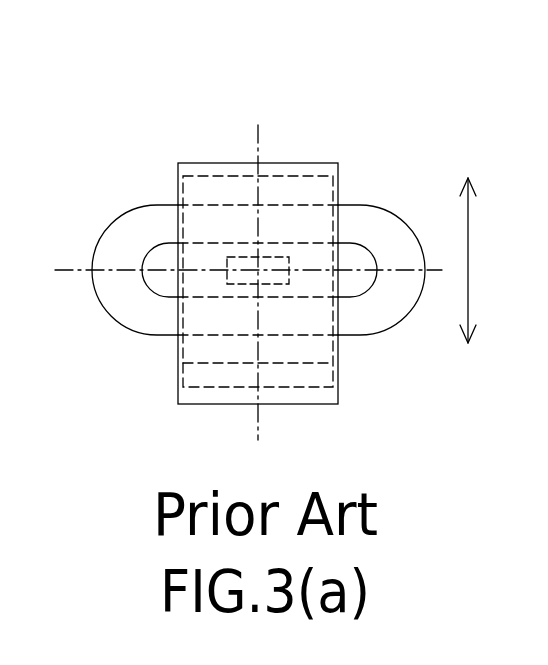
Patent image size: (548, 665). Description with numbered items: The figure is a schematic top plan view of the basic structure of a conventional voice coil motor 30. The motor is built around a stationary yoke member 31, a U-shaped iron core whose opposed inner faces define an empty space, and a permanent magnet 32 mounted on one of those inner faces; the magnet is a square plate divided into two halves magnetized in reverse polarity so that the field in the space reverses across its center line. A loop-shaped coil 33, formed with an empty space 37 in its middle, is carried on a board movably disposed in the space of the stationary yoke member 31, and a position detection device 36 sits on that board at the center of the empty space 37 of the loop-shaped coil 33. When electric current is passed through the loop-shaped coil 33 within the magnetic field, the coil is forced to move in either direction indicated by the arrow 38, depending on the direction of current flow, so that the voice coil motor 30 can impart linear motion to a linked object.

The voice coil motor 30 is at (150, 126).
The stationary yoke member 31 is at (287, 162).
The permanent magnet 32 is at (202, 345).
The loop-shaped coil 33 is at (157, 222).
The position detection device 36 is at (256, 256).
The empty space 37 is at (357, 275).
The arrow 38 is at (467, 242).